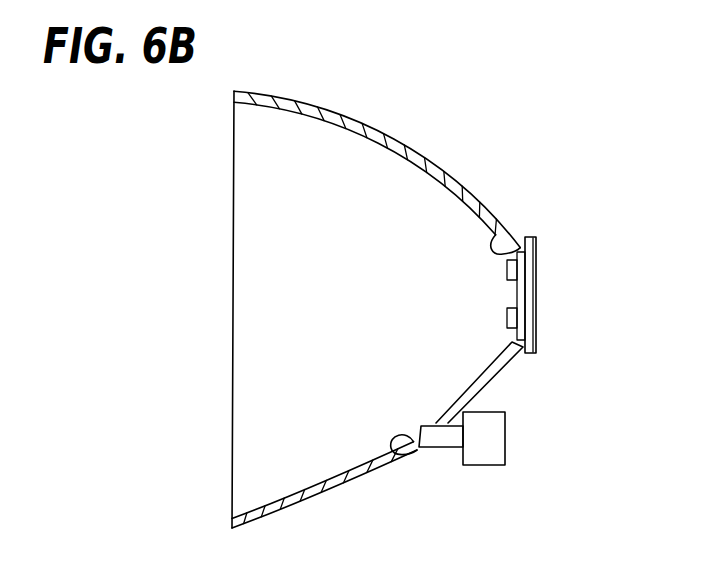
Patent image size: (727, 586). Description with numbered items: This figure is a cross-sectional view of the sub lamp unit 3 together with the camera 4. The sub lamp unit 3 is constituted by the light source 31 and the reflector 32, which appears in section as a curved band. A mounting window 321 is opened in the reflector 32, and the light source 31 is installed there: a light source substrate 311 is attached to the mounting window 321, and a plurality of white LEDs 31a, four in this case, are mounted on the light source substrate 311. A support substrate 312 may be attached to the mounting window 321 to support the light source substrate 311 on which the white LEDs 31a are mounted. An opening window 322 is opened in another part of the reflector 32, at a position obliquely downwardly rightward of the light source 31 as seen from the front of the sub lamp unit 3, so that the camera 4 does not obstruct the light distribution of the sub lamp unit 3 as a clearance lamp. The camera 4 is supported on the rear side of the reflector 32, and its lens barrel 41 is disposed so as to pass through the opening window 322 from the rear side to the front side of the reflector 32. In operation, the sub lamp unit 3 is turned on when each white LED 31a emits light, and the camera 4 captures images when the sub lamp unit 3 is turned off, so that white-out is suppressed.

The sub lamp unit 3 is at (438, 147).
The reflector 32 is at (463, 186).
The mounting window 321 is at (509, 244).
The opening window 322 is at (399, 455).
The light source 31 is at (540, 310).
The light source substrate 311 is at (537, 258).
The support substrate 312 is at (537, 348).
The white LED 31a is at (506, 273).
The camera 4 is at (504, 457).
The lens barrel 41 is at (428, 425).